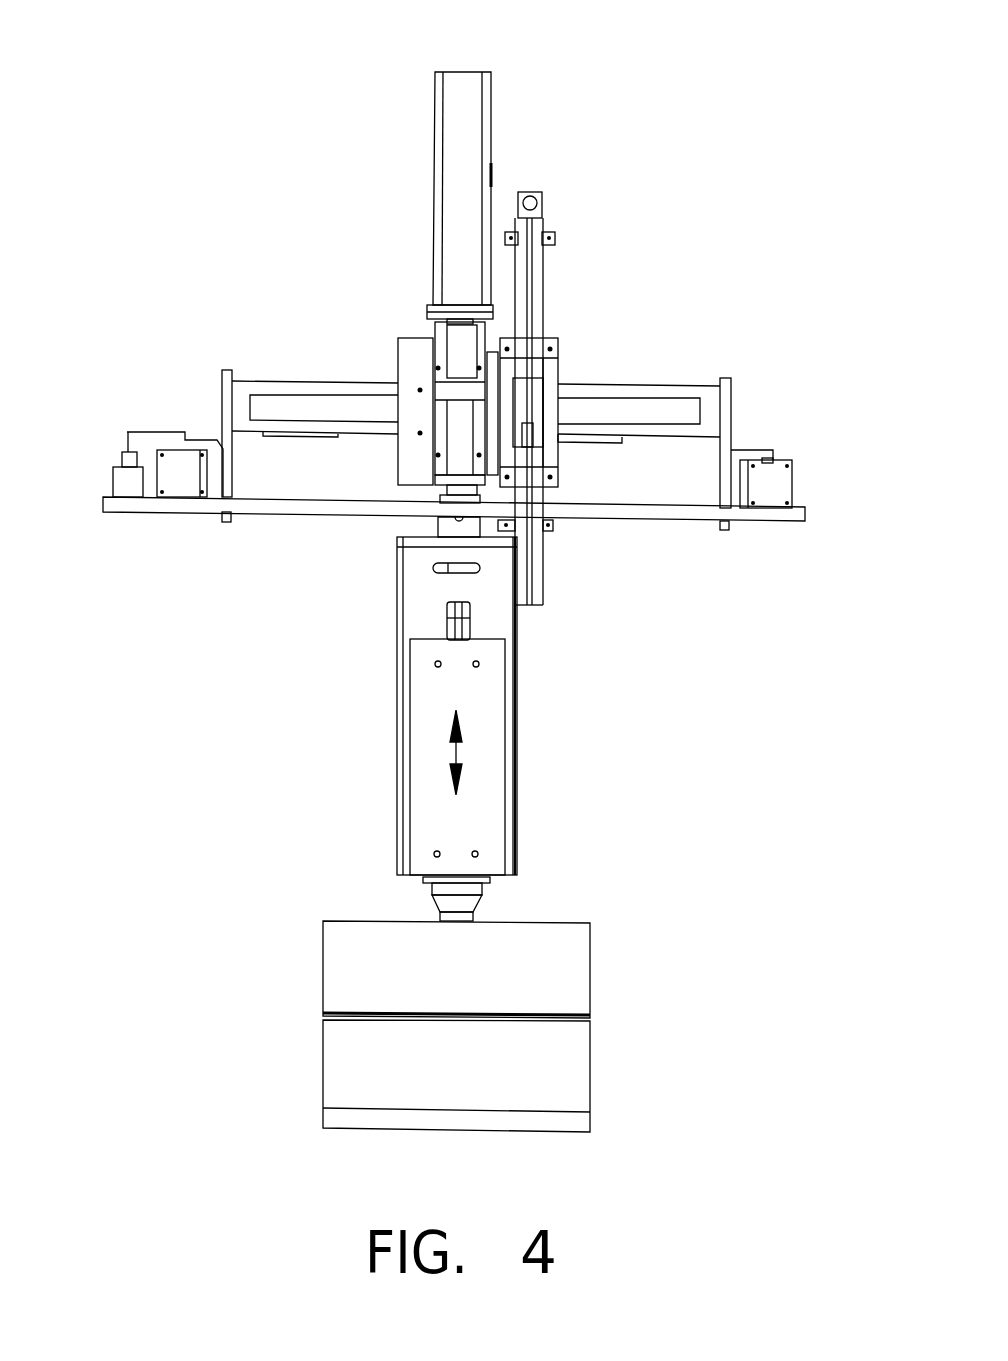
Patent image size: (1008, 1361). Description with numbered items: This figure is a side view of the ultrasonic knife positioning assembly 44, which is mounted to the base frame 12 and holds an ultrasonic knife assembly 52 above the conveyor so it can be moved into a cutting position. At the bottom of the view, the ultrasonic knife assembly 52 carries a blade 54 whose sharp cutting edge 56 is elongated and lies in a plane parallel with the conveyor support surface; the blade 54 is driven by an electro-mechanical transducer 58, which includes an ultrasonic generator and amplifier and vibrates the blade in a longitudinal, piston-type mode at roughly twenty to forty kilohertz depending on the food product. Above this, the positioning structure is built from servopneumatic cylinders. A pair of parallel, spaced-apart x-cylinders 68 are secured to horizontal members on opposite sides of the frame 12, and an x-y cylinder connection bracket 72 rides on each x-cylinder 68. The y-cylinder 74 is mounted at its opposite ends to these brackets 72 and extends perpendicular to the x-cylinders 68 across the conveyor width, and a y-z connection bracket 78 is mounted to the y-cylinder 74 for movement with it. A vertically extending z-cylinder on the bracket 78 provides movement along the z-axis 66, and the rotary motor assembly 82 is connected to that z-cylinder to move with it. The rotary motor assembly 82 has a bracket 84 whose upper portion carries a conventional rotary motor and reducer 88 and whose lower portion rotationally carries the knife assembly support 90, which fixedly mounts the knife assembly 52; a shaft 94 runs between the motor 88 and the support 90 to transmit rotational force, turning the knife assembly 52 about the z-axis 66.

The base frame 12 is at (435, 555).
The ultrasonic knife positioning assembly 44 is at (263, 79).
The ultrasonic knife assembly 52 is at (544, 757).
The blade 54 is at (538, 969).
The cutting edge 56 is at (526, 1076).
The electro-mechanical transducer 58 is at (377, 876).
The z-axis 66 is at (355, 762).
The servopneumatic x-cylinders 68 is at (485, 424).
The x-y cylinder connection bracket 72 is at (500, 383).
The servopneumatic y-cylinder 74 is at (438, 337).
The y-z connection bracket 78 is at (309, 472).
The rotary motor assembly 82 is at (215, 177).
The bracket 84 is at (406, 395).
The rotary motor and reducer 88 is at (548, 198).
The knife assembly support 90 is at (540, 696).
The shaft 94 is at (391, 423).